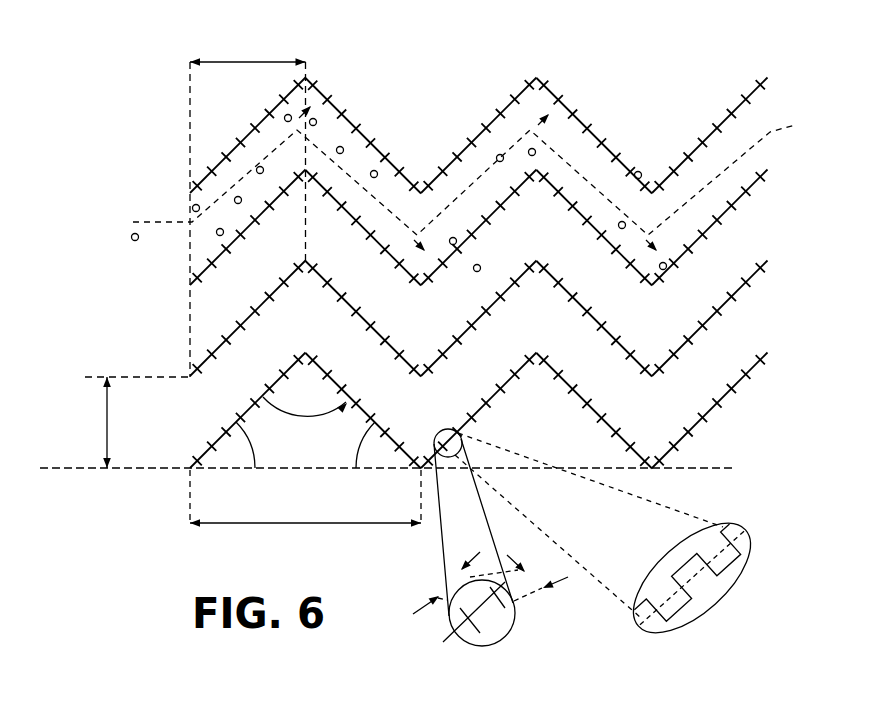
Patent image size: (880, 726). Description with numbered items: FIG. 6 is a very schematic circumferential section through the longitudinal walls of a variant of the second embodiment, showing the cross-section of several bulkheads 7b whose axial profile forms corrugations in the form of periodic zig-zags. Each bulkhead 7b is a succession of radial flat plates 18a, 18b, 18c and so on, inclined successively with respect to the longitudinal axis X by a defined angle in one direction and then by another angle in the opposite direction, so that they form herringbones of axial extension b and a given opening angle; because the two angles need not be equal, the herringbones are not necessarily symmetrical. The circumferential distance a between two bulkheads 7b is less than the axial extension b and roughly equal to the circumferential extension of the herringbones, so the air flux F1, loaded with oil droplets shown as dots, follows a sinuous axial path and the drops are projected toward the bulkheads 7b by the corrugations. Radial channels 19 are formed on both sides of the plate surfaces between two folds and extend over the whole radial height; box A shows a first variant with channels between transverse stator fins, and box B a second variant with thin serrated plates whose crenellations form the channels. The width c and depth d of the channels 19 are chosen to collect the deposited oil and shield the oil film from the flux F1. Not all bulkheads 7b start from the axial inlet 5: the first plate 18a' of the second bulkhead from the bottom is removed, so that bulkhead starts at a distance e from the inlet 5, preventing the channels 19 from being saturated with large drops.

The inlet 5 is at (182, 140).
The bulkhead 7b is at (747, 396).
The radial flat plate 18a is at (225, 411).
The first plate of the second bulkhead 18a' is at (293, 319).
The radial flat plate 18b is at (369, 411).
The radial flat plate 18c is at (470, 417).
The radial channel 19 is at (745, 297).
The air flux F1 is at (778, 138).
The longitudinal axis X is at (385, 486).
The box A is at (514, 630).
The box B is at (724, 585).
The circumferential distance a is at (137, 422).
The axial extension b is at (305, 498).
The width c is at (422, 599).
The depth d is at (554, 589).
The distance e is at (248, 205).